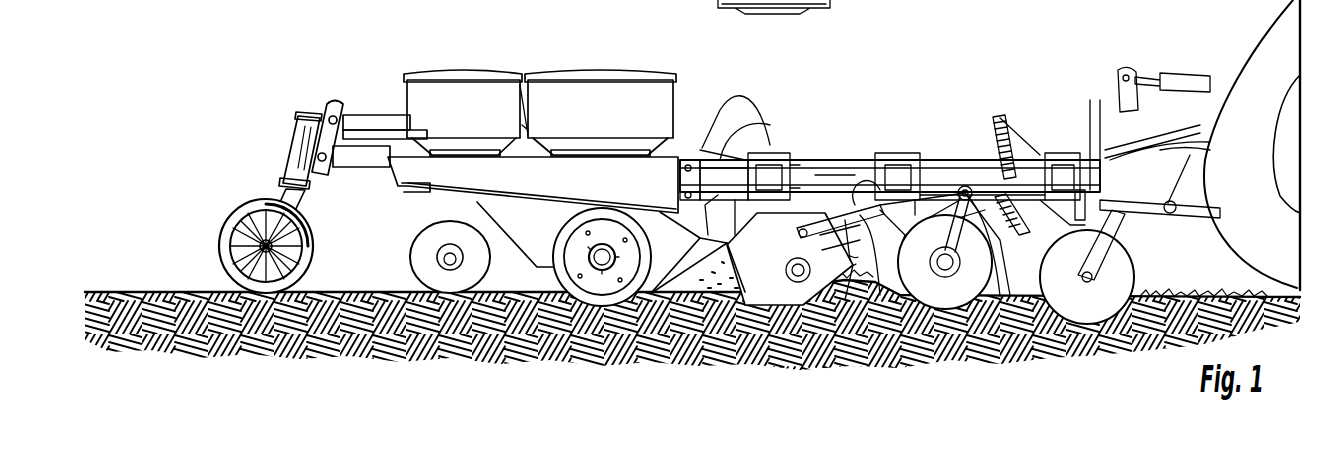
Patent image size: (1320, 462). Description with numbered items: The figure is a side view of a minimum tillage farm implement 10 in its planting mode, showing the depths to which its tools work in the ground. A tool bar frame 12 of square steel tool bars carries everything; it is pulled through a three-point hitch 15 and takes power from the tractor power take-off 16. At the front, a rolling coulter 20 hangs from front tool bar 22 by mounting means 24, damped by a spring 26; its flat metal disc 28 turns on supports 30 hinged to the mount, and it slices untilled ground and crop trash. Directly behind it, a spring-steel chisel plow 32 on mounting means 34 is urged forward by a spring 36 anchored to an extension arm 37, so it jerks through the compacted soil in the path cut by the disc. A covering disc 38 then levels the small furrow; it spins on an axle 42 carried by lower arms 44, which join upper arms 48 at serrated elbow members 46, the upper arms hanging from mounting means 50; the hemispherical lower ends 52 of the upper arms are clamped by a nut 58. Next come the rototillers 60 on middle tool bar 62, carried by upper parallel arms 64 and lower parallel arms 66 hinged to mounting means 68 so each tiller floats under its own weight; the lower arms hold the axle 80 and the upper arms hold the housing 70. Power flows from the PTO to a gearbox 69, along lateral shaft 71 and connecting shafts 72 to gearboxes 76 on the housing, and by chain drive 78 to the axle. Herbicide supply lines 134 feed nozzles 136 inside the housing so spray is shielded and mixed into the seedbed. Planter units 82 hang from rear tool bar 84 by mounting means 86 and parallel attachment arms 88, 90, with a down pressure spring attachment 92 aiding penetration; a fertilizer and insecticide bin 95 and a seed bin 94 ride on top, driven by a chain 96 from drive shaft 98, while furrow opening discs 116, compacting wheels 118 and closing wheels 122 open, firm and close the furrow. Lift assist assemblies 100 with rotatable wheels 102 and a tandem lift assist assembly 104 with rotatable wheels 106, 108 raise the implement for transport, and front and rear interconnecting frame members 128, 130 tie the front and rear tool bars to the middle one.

The minimum tillage farm implement 10 is at (1132, 22).
The tool bar frame 12 is at (829, 150).
The three-point hitch 15 is at (1187, 75).
The power take-off 16 is at (918, 185).
The rolling coulter 20 is at (1148, 272).
The front tool bar 22 is at (1055, 160).
The mounting means 24 is at (1085, 110).
The spring 26 is at (1112, 90).
The disc 28 is at (1130, 248).
The supports 30 is at (1125, 232).
The chisel plow 32 is at (1005, 290).
The mounting means 34 is at (1020, 300).
The spring 36 is at (1000, 115).
The extension arm 37 is at (1122, 108).
The disc 38 is at (912, 270).
The axles 42 is at (925, 290).
The lower arms 44 is at (940, 312).
The elbow members 46 is at (940, 210).
The upper arms 48 is at (1005, 180).
The mounting means 50 is at (1030, 120).
The lower ends 52 is at (942, 210).
The nut 58 is at (1013, 214).
The rototillers 60 is at (762, 270).
The middle tool bar 62 is at (866, 160).
The upper parallel arms 64 is at (800, 305).
The lower parallel arms 66 is at (808, 305).
The mounting means 68 is at (855, 290).
The gearbox 69 is at (868, 290).
The housing 70 is at (820, 306).
The lateral shaft 71 is at (895, 205).
The connecting shafts 72 is at (855, 160).
The gearboxes 76 is at (796, 158).
The chain drive 78 is at (783, 226).
The axle 80 is at (786, 281).
The planter units 82 is at (592, 59).
The rear tool bar 84 is at (786, 153).
The mounting means 86 is at (778, 153).
The parallel attachment arms 88 is at (745, 120).
The parallel attachment arms 90 is at (725, 245).
The down pressure spring attachment 92 is at (715, 205).
The bin 94 is at (648, 108).
The bin 95 is at (497, 108).
The chain 96 is at (682, 184).
The drive shaft 98 is at (738, 145).
The lift assist assemblies 100 is at (376, 99).
The rotatable wheels 102 is at (240, 214).
The tandem lift assist assembly 104 is at (982, 22).
The rotatable wheel 106 is at (795, 2).
The rotatable wheel 108 is at (1015, 3).
The furrow opening discs 116 is at (622, 304).
The compacting wheels 118 is at (610, 306).
The closing wheels 122 is at (455, 293).
The front interconnecting frame members 128 is at (998, 115).
The rear interconnecting frame members 130 is at (835, 178).
The supply lines 134 is at (1200, 136).
The nozzles 136 is at (928, 262).